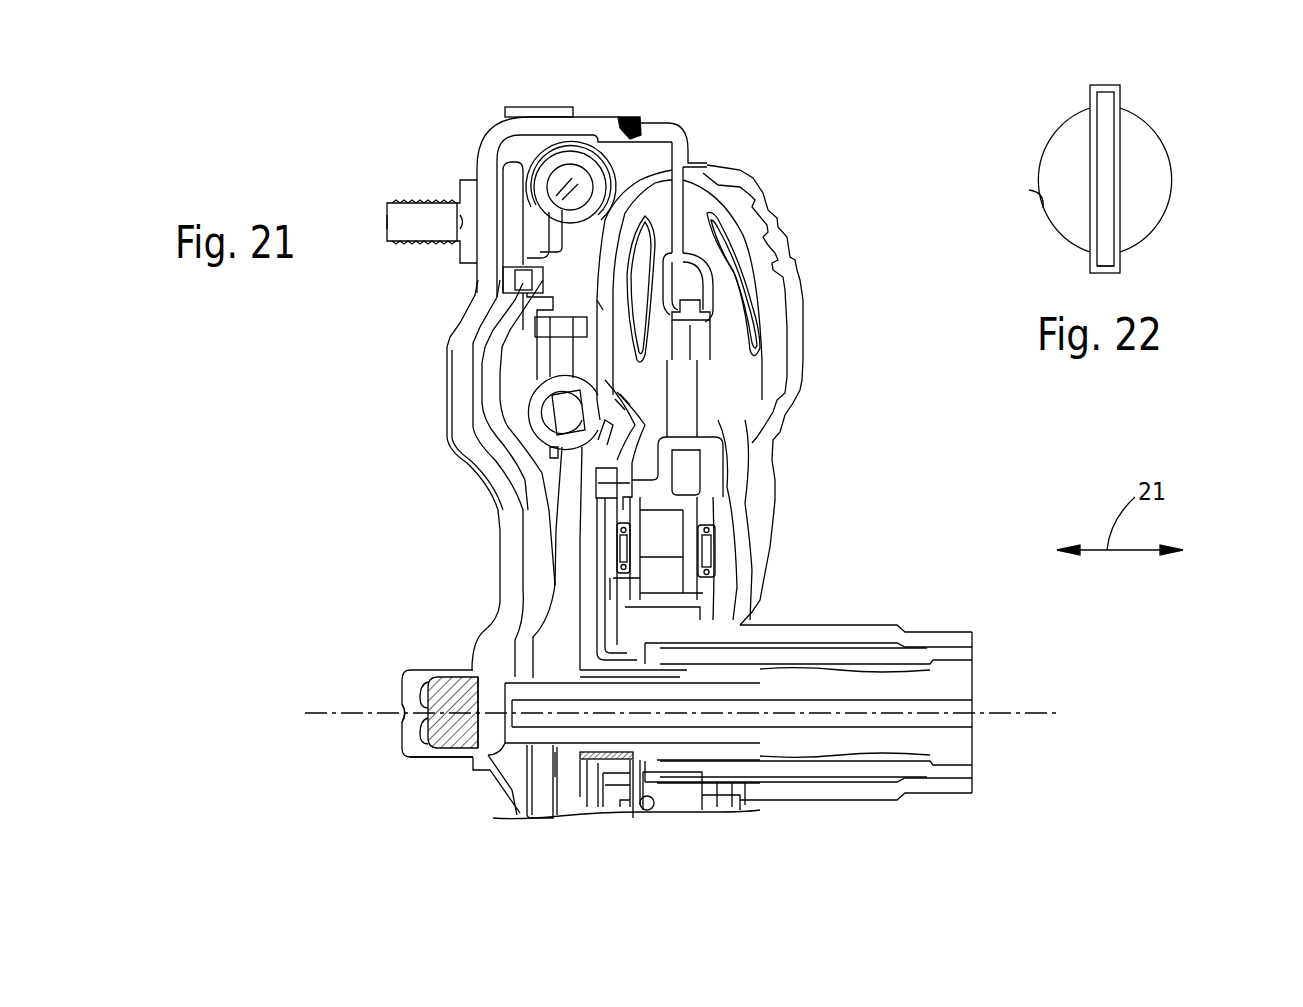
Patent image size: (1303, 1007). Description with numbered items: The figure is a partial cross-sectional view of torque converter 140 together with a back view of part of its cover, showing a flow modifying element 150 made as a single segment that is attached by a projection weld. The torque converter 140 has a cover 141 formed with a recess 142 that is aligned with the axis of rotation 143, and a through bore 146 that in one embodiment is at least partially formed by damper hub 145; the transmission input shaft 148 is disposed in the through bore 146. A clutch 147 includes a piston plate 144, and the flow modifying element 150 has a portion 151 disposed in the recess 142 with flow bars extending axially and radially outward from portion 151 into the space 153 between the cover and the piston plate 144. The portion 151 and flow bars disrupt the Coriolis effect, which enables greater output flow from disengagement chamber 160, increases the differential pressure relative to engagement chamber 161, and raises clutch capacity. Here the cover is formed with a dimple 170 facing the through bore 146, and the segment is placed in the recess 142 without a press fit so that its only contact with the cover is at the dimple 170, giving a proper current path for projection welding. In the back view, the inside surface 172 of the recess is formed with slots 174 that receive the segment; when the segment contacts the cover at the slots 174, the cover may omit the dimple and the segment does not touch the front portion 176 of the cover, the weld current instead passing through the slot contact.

In FIG. 21, the torque converter 140 is at (356, 130).
In FIG. 21, the cover 141 is at (503, 117).
In FIG. 21, the recess 142 is at (427, 653).
In FIG. 22, the recess 142 is at (1148, 192).
In FIG. 21, the axis of rotation 143 is at (1057, 715).
In FIG. 21, the piston plate 144 is at (517, 452).
In FIG. 21, the damper hub 145 is at (587, 803).
In FIG. 21, the through bore 146 is at (525, 736).
In FIG. 21, the clutch 147 is at (480, 162).
In FIG. 22, the clutch 147 is at (1195, 118).
In FIG. 21, the transmission input shaft 148 is at (838, 655).
In FIG. 21, the flow modifying element 150 is at (418, 735).
In FIG. 21, the portion 151 is at (425, 690).
In FIG. 21, the space 153 is at (502, 683).
In FIG. 21, the disengagement chamber 160 is at (480, 403).
In FIG. 21, the engagement chamber 161 is at (513, 350).
In FIG. 21, the dimple 170 is at (410, 671).
In FIG. 22, the inside surface 172 is at (1042, 210).
In FIG. 21, the slots 174 is at (447, 757).
In FIG. 22, the slots 174 is at (1108, 275).
In FIG. 21, the front portion 176 is at (402, 743).